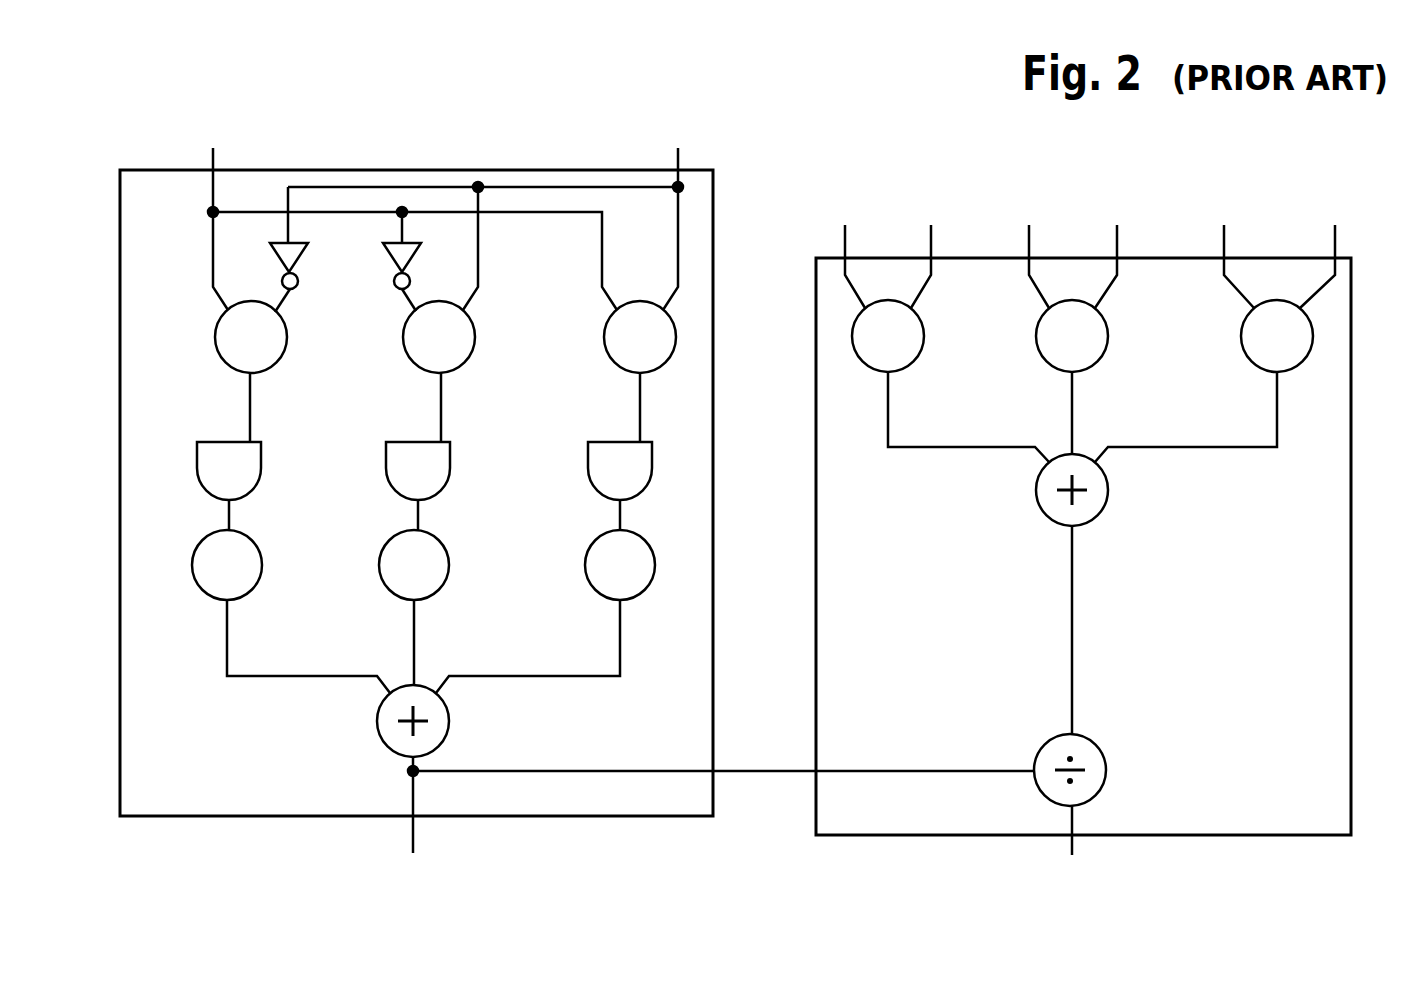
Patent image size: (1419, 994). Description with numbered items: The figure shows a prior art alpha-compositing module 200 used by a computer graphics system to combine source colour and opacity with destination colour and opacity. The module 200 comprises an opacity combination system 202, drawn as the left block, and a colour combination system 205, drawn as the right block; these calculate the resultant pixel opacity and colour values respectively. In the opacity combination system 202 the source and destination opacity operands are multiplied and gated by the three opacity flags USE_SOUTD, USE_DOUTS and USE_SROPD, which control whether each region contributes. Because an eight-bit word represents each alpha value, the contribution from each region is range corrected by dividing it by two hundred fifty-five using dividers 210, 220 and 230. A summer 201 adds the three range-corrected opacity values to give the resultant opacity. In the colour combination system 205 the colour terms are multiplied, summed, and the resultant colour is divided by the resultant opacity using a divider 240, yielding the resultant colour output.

The alpha-compositing module 200 is at (214, 57).
The summer 201 is at (377, 722).
The opacity combination system 202 is at (612, 817).
The colour combination system 205 is at (1232, 836).
The divider 210 is at (263, 565).
The divider 220 is at (449, 565).
The divider 230 is at (585, 567).
The divider 240 is at (1106, 770).